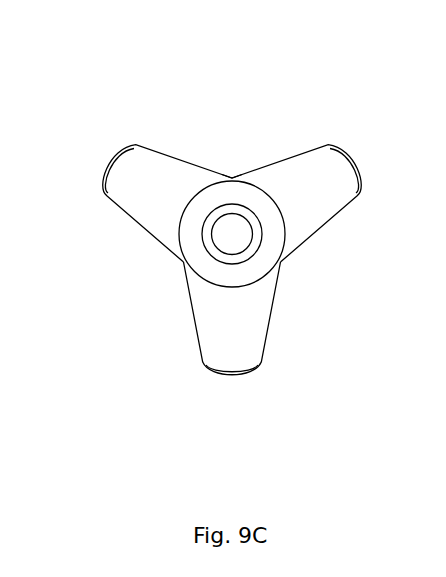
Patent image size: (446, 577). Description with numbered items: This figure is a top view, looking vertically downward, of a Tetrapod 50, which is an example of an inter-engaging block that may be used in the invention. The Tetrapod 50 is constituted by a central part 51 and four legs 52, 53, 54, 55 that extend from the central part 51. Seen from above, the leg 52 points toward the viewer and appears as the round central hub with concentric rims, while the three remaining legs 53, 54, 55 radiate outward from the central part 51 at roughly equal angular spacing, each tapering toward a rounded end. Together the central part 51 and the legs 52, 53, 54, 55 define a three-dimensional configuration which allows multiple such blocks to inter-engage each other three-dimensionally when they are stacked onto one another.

The Tetrapod 50 is at (118, 78).
The central part 51 is at (232, 176).
The leg 52 is at (265, 251).
The leg 53 is at (252, 332).
The leg 54 is at (301, 168).
The leg 55 is at (138, 202).